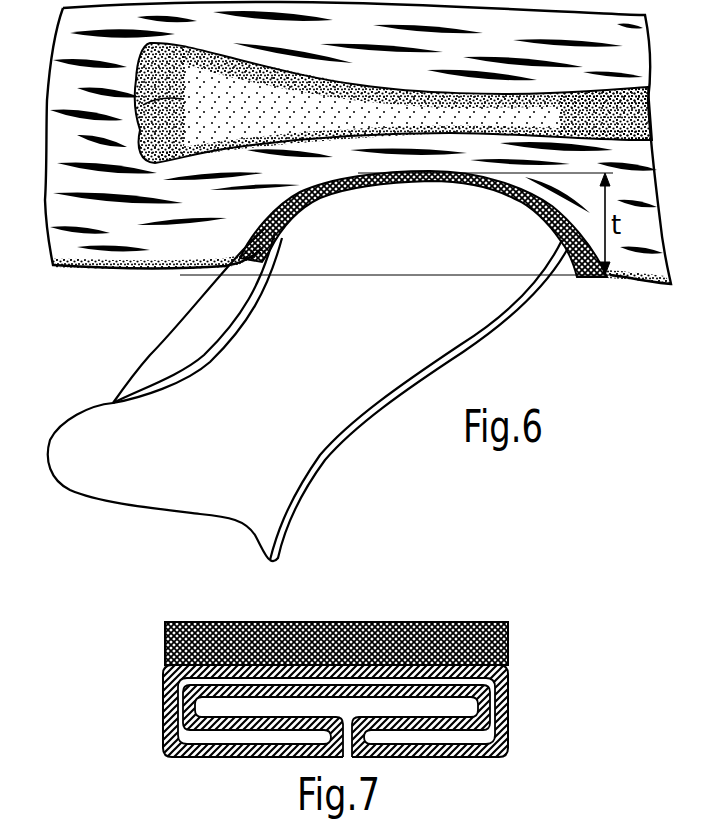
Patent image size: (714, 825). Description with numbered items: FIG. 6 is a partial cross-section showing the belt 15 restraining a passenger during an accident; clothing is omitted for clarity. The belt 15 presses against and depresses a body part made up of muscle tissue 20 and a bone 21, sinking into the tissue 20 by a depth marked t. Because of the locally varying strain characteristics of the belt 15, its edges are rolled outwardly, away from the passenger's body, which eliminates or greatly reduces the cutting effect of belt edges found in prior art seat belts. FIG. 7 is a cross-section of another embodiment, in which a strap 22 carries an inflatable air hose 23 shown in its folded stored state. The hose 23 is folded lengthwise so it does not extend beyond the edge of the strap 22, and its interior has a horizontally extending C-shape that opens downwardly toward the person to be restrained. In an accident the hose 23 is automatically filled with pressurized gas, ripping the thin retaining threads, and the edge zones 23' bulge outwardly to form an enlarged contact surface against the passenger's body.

In FIG. 6, the belt 15 is at (443, 337).
In FIG. 6, the muscle tissue 20 is at (123, 220).
In FIG. 6, the bone 21 is at (67, 107).
In FIG. 7, the strap 22 is at (460, 640).
In FIG. 7, the inflatable air hose 23 is at (360, 711).
In FIG. 7, the edge zones 23' is at (336, 761).